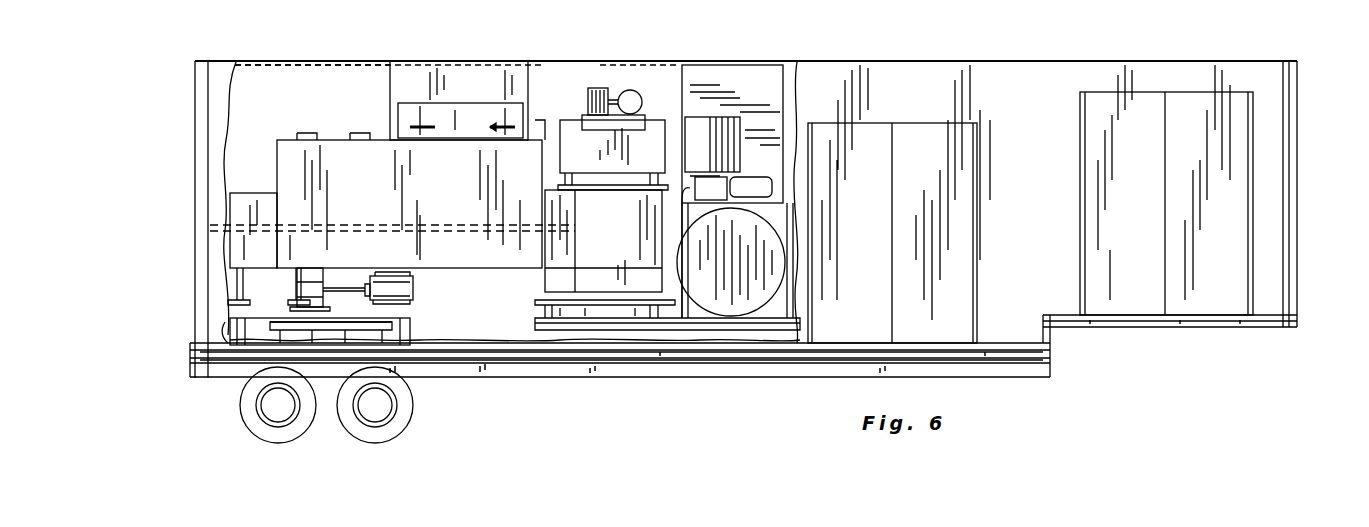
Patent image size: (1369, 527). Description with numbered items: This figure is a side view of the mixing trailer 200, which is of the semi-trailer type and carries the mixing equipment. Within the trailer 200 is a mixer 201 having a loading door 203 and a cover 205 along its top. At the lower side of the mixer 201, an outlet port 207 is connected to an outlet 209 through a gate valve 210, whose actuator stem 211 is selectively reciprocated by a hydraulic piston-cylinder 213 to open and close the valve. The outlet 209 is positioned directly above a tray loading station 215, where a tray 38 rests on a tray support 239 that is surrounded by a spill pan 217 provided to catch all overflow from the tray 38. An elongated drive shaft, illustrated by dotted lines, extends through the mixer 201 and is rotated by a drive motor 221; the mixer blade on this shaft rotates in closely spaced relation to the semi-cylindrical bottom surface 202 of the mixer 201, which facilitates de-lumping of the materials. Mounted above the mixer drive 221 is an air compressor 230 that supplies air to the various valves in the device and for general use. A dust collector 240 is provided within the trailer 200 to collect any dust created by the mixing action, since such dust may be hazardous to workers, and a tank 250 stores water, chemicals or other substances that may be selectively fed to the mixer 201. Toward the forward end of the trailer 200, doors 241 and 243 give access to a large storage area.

The mixing trailer 200 is at (1297, 136).
The mixer 201 is at (428, 195).
The bottom surface 202 is at (523, 305).
The loading door 203 is at (455, 110).
The cover 205 is at (328, 140).
The outlet port 207 is at (300, 272).
The outlet 209 is at (300, 305).
The gate valve 210 is at (317, 285).
The actuator stem 211 is at (355, 288).
The hydraulic piston-cylinder 213 is at (413, 290).
The tray loading station 215 is at (415, 331).
The spill pan 217 is at (400, 348).
The drive motor 221 is at (630, 243).
The air compressor 230 is at (652, 118).
The tray support 239 is at (352, 345).
The dust collector 240 is at (757, 82).
The door 241 is at (910, 148).
The door 243 is at (1190, 104).
The tank 250 is at (725, 295).
The tray 38 is at (333, 325).